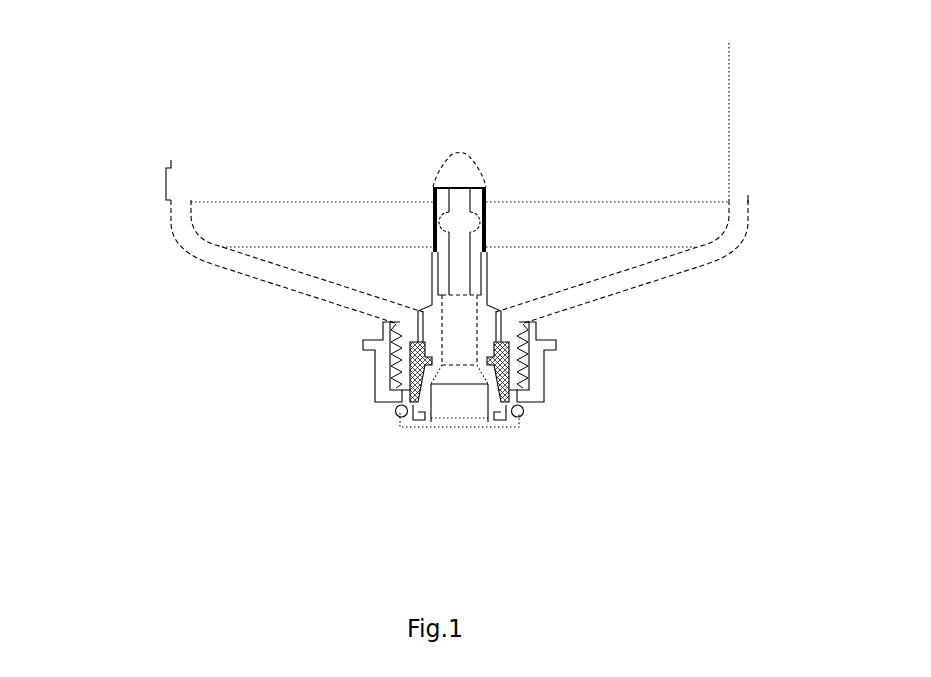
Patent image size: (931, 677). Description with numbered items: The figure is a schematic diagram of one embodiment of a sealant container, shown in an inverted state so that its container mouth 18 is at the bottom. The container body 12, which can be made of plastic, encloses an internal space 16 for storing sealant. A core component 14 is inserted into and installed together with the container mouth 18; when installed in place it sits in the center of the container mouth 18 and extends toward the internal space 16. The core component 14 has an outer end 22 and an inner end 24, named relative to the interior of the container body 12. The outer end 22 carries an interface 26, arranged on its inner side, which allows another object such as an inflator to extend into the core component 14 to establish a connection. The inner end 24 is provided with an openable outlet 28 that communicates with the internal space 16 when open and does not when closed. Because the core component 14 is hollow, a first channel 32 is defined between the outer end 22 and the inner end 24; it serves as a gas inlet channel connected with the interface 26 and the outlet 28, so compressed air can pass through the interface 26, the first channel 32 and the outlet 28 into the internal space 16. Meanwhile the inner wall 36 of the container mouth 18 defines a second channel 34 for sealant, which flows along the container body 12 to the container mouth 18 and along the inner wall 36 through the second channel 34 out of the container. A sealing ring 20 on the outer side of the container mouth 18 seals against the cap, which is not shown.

The container body 12 is at (178, 93).
The internal space 16 is at (222, 147).
The inner end 24 is at (442, 136).
The outlet 28 is at (478, 222).
The first channel 32 is at (465, 318).
The core component 14 is at (400, 326).
The container mouth 18 is at (393, 362).
The sealing ring 20 is at (395, 409).
The outer end 22 is at (430, 443).
The interface 26 is at (487, 388).
The inner wall 36 is at (509, 367).
The second channel 34 is at (518, 400).